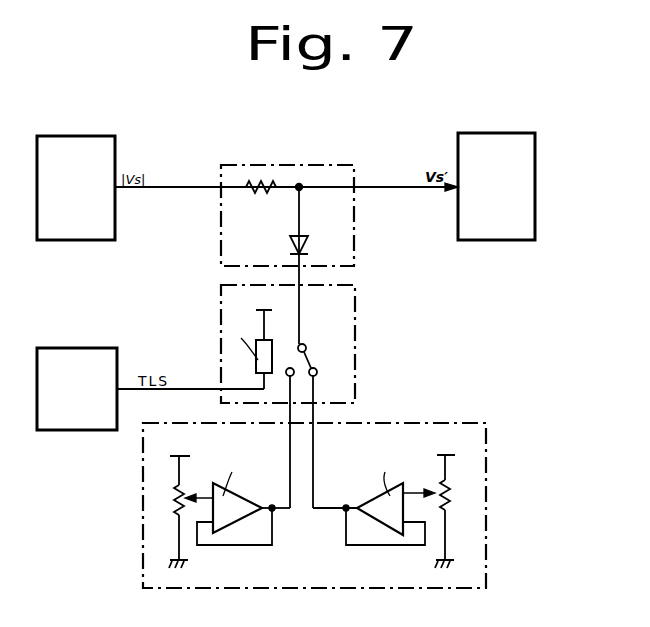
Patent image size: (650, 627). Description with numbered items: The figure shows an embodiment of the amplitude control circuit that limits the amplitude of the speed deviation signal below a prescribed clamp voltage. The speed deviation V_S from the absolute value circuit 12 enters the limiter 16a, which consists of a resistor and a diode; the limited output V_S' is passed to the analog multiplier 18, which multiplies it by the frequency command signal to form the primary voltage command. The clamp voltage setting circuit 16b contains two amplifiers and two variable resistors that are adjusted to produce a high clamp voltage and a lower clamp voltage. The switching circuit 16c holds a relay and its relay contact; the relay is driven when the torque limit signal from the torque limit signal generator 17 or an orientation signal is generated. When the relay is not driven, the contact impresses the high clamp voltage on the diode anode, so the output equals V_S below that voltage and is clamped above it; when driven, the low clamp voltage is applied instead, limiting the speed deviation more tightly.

The absolute value circuit 12 is at (72, 142).
The analog multiplier 18 is at (499, 135).
The torque limit signal generator 17 is at (75, 350).
The limiter 16a is at (325, 170).
The clamp voltage setting circuit 16b is at (428, 432).
The switching circuit 16c is at (345, 330).